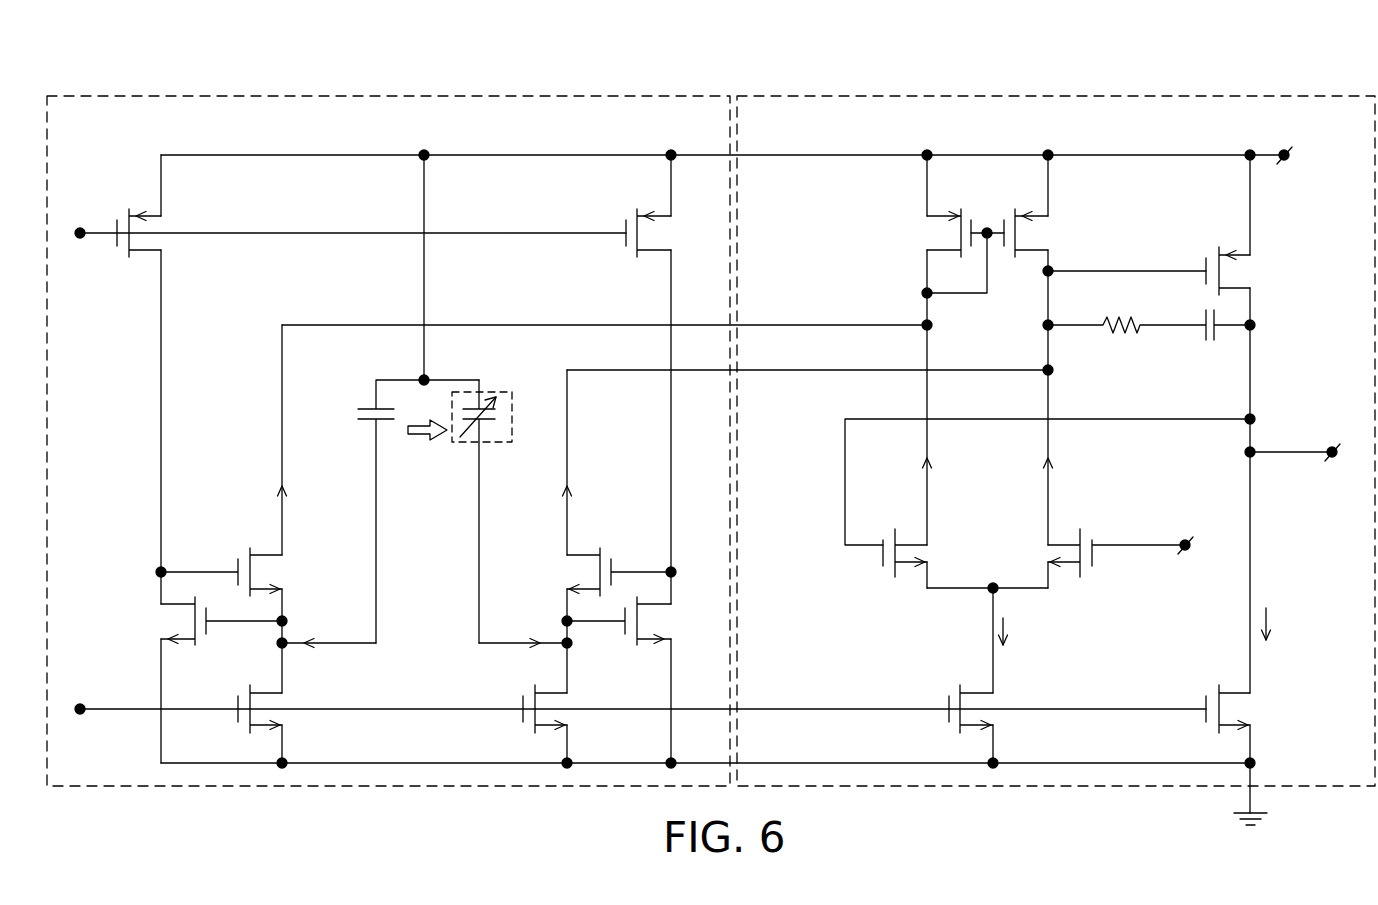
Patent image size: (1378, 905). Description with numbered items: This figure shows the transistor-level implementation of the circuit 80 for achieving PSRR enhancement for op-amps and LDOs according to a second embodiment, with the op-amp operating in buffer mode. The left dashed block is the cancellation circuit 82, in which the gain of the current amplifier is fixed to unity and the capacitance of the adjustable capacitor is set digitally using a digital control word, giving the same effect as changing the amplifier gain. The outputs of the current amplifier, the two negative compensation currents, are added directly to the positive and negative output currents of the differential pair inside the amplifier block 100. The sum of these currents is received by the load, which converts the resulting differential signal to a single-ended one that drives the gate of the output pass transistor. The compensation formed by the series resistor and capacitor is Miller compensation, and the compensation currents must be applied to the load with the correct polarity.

The circuit 80 is at (939, 62).
The cancellation circuit 82 is at (493, 96).
The operational amplifier 100 is at (1147, 96).